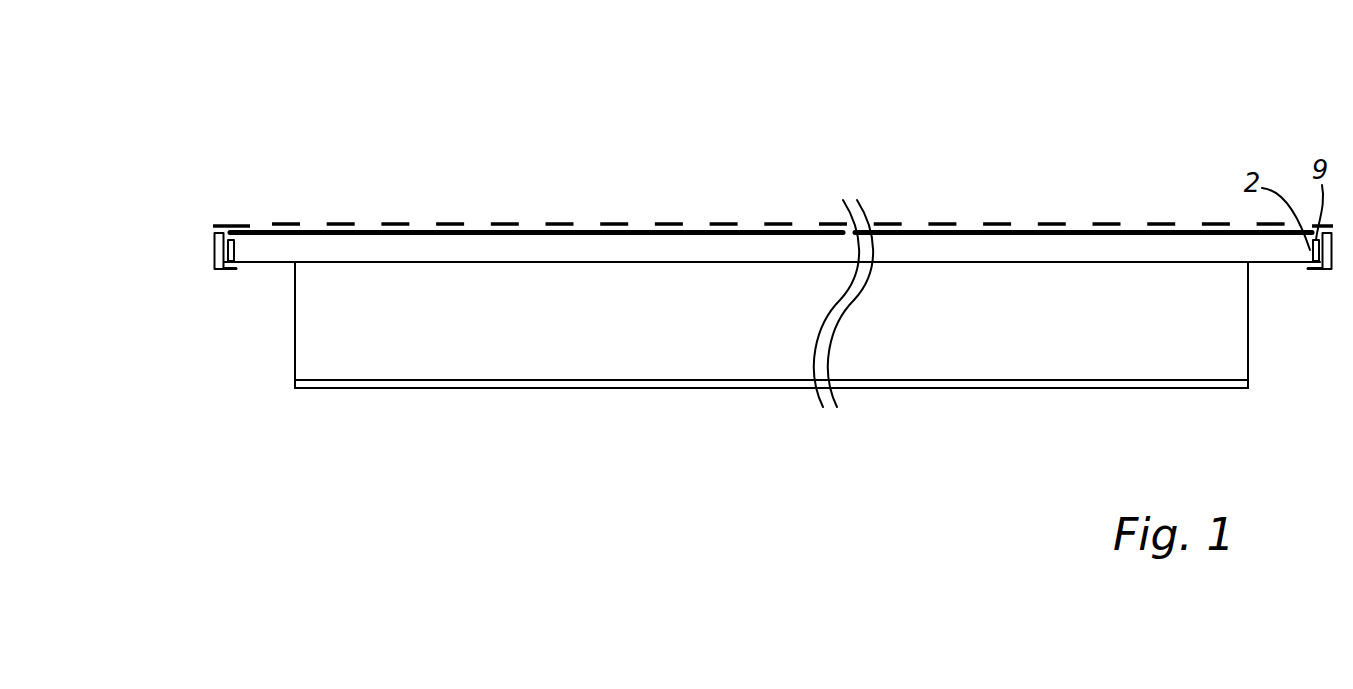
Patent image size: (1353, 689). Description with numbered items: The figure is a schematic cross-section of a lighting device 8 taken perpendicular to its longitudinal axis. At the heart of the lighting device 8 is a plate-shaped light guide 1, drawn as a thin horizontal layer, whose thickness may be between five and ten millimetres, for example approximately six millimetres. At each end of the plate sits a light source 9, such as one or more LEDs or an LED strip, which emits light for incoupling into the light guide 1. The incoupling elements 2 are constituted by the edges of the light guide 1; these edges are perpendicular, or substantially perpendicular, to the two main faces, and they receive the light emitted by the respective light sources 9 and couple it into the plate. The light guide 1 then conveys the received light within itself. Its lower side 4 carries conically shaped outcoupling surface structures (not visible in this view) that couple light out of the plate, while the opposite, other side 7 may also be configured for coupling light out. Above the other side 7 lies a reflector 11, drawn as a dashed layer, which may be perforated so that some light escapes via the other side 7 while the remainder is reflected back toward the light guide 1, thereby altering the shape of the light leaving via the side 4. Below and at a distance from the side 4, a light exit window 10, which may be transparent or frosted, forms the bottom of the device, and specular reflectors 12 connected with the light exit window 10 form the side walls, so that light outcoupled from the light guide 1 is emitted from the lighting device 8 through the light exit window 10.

The light guide 1 is at (423, 247).
The incoupling elements 2 is at (236, 250).
The side of the light guide 4 is at (748, 264).
The other side of the light guide 7 is at (972, 231).
The lighting device 8 is at (1166, 109).
The light sources 9 is at (228, 238).
The light exit window 10 is at (690, 389).
The reflector 11 is at (721, 214).
The specular reflectors 12 is at (293, 319).